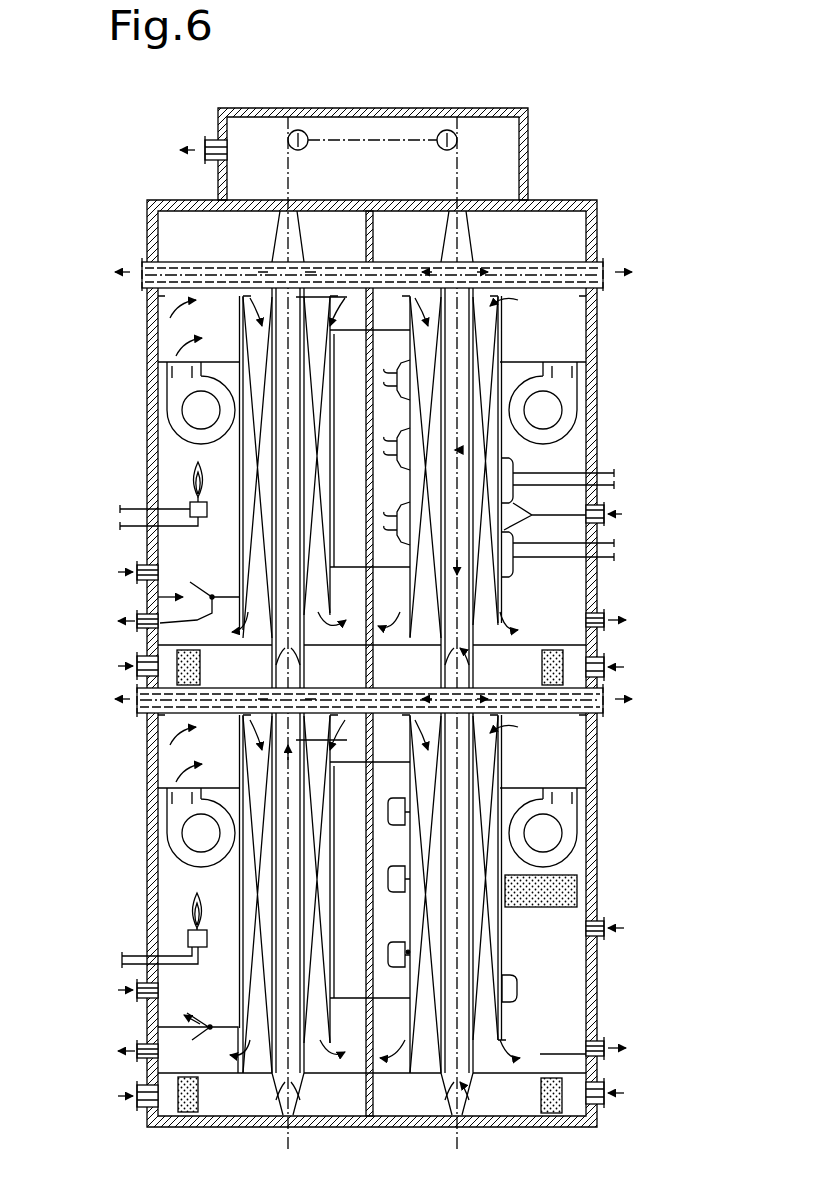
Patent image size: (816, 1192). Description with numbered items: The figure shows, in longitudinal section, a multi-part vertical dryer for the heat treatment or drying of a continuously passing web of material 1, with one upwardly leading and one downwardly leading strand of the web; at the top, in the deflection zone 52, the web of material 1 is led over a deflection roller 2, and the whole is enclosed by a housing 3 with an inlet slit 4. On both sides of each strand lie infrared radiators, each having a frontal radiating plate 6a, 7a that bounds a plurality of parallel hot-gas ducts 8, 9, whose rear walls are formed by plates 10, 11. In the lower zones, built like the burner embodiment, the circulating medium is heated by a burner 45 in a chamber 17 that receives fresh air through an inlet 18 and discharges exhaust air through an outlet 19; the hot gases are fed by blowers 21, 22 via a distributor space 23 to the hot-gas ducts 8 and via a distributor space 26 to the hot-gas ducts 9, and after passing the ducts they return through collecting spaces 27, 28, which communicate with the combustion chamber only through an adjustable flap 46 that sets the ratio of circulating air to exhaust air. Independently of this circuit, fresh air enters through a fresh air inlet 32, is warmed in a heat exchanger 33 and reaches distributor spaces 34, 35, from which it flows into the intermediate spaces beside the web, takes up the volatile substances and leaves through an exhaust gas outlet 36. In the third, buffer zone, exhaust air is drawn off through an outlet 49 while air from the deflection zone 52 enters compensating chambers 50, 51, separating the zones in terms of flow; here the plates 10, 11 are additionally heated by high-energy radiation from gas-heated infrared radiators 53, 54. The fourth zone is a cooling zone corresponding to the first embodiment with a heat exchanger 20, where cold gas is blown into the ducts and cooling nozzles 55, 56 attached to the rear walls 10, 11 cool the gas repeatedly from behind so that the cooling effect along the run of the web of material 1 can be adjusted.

The web of material 1 is at (460, 178).
The deflection roller 2 is at (291, 134).
The housing 3 is at (420, 335).
The inlet slit 4 is at (435, 809).
The radiating plate 6a is at (458, 448).
The radiating plate 7a is at (514, 480).
The hot-gas ducts 8 is at (398, 312).
The hot-gas ducts 9 is at (425, 342).
The plate 10 is at (450, 452).
The plate 11 is at (397, 413).
The chamber 17 is at (196, 550).
The inlet 18 is at (135, 572).
The outlet 19 is at (135, 617).
The heat exchanger 20 is at (570, 882).
The blower 21 is at (170, 387).
The blower 22 is at (372, 621).
The distributor space 23 is at (203, 322).
The distributor space 26 is at (347, 300).
The collecting space 27 is at (374, 1110).
The collecting space 28 is at (540, 1054).
The fresh air inlet 32 is at (137, 667).
The heat exchanger 33 is at (176, 670).
The distributor space 34 is at (257, 672).
The distributor space 35 is at (398, 657).
The exhaust gas outlet 36 is at (580, 265).
The burner 45 is at (190, 510).
The adjustable flap 46 is at (183, 598).
The outlet 49 is at (207, 157).
The compensating chamber 50 is at (332, 225).
The compensating chamber 51 is at (488, 237).
The deflection zone 52 is at (205, 148).
The gas-heated infrared radiator 53 is at (606, 515).
The gas-heated infrared radiator 54 is at (400, 503).
The cooling nozzle 55 is at (516, 993).
The cooling nozzle 56 is at (408, 952).